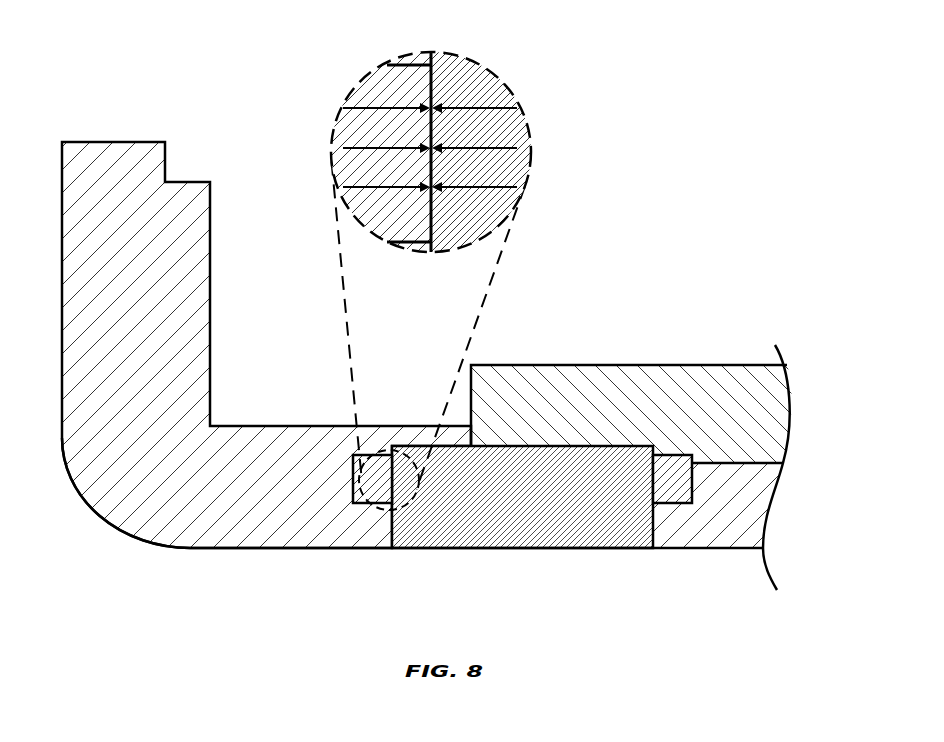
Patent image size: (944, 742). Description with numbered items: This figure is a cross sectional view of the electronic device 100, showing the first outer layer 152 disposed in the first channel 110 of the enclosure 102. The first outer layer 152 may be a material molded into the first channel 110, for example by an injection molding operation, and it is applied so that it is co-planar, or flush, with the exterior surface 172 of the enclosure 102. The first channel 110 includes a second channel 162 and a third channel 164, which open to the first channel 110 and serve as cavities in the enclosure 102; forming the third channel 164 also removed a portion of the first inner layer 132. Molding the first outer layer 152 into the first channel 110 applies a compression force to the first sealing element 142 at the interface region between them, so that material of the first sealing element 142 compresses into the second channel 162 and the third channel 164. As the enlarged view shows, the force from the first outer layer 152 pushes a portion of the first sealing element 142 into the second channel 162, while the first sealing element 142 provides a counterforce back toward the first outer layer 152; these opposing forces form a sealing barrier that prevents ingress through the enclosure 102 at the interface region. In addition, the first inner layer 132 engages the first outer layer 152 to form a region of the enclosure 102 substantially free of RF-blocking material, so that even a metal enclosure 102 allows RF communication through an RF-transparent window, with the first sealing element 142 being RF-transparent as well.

The electronic device 100 is at (778, 178).
The enclosure 102 is at (124, 321).
The first channel 110 is at (553, 576).
The first inner layer 132 is at (635, 411).
The first sealing element 142 is at (358, 84).
The first outer layer 152 is at (509, 501).
The second channel 162 is at (377, 505).
The third channel 164 is at (683, 505).
The exterior surface 172 is at (287, 548).